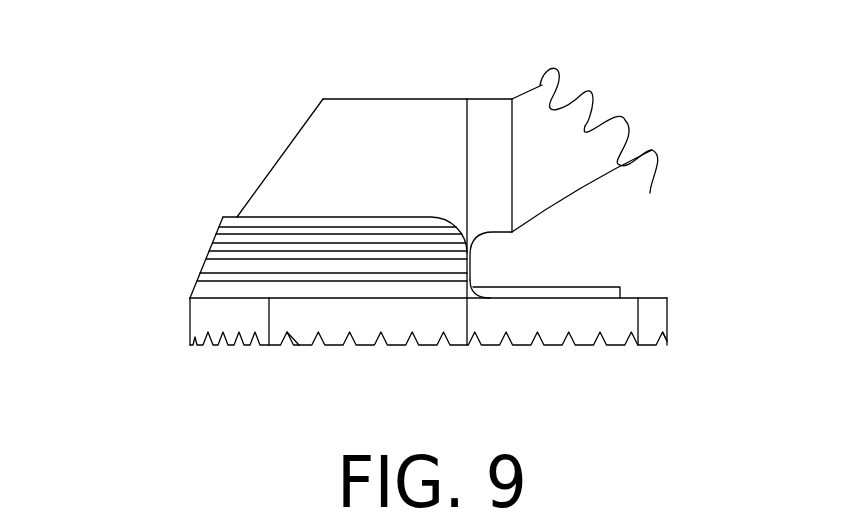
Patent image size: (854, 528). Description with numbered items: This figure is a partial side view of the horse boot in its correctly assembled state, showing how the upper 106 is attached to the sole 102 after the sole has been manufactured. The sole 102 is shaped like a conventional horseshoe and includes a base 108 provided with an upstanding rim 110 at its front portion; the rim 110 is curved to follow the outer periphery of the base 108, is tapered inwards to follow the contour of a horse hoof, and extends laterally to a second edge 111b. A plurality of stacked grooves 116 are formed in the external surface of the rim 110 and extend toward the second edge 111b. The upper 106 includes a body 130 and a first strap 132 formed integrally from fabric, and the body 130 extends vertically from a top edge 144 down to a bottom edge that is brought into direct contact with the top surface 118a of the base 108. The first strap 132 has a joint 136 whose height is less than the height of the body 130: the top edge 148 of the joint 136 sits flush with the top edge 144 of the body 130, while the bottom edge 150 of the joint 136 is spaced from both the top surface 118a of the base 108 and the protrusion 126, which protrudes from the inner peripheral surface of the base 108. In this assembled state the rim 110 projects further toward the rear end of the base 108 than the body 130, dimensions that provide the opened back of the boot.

The sole 102 is at (187, 348).
The upper 106 is at (268, 145).
The base 108 is at (198, 322).
The rim 110 is at (225, 218).
The second edge 111b is at (497, 271).
The grooves 116 is at (203, 278).
The top surface 118a is at (663, 298).
The protrusion 126 is at (621, 288).
The body 130 is at (322, 123).
The first strap 132 is at (575, 102).
The joint 136 is at (497, 107).
The top edge 144 is at (412, 99).
The top edge 148 is at (480, 99).
The bottom edge 150 is at (503, 233).